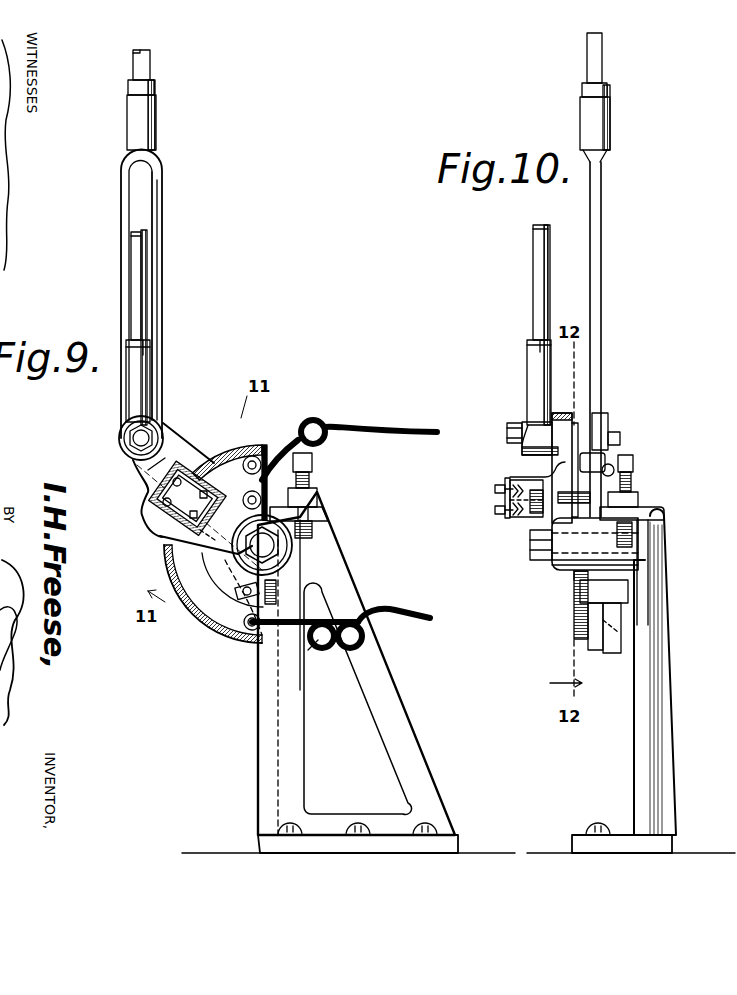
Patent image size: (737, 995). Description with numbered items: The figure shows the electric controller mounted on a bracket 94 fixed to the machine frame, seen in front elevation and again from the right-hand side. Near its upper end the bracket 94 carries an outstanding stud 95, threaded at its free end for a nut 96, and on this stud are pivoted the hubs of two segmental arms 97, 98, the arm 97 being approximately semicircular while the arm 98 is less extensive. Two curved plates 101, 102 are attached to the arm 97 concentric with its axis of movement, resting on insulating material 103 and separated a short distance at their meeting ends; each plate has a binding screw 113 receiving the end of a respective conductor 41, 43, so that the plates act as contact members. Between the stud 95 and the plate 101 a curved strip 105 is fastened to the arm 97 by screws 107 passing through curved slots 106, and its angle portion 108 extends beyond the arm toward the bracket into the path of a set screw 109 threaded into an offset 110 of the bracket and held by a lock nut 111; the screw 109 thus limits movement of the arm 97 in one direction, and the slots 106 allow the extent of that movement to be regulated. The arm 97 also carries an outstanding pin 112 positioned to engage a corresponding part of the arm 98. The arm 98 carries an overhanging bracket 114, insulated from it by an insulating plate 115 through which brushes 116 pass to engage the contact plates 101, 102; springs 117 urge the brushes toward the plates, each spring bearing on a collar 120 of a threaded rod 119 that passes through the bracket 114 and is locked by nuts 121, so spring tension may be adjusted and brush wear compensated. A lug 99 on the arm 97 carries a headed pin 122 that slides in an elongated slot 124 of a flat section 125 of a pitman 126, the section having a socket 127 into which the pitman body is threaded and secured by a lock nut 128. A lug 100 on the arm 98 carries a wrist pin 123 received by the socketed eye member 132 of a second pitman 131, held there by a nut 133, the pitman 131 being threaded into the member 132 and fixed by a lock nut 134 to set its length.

In FIG. 9, the conductor 41 is at (402, 432).
In FIG. 9, the conductor 43 is at (413, 615).
In FIG. 9, the bracket 94 is at (396, 720).
In FIG. 10, the bracket 94 is at (650, 730).
In FIG. 9, the stud 95 is at (276, 556).
In FIG. 10, the stud 95 is at (536, 555).
In FIG. 9, the nut 96 is at (292, 545).
In FIG. 10, the nut 96 is at (580, 597).
In FIG. 9, the segmental arm 97 is at (216, 628).
In FIG. 10, the segmental arm 97 is at (606, 650).
In FIG. 9, the segmental arm 98 is at (146, 526).
In FIG. 10, the segmental arm 98 is at (603, 416).
In FIG. 9, the lug 99 is at (168, 428).
In FIG. 10, the lug 99 is at (607, 417).
In FIG. 9, the lug 100 is at (158, 470).
In FIG. 10, the lug 100 is at (540, 450).
In FIG. 9, the curved plate 101 is at (186, 603).
In FIG. 10, the curved plate 101 is at (574, 618).
In FIG. 9, the curved plate 102 is at (246, 460).
In FIG. 10, the curved plate 102 is at (606, 462).
In FIG. 9, the insulating material 103 is at (246, 640).
In FIG. 10, the insulating material 103 is at (588, 642).
In FIG. 9, the curved strip 105 is at (240, 630).
In FIG. 9, the curved slot 106 is at (216, 566).
In FIG. 9, the screw 107 is at (312, 648).
In FIG. 10, the screw 107 is at (573, 604).
In FIG. 9, the angle portion 108 is at (277, 596).
In FIG. 10, the angle portion 108 is at (628, 594).
In FIG. 9, the set screw 109 is at (312, 532).
In FIG. 10, the set screw 109 is at (634, 535).
In FIG. 9, the offset 110 is at (325, 511).
In FIG. 10, the offset 110 is at (652, 514).
In FIG. 9, the lock nut 111 is at (318, 497).
In FIG. 10, the lock nut 111 is at (640, 500).
In FIG. 9, the pin 112 is at (313, 461).
In FIG. 10, the pin 112 is at (634, 483).
In FIG. 9, the binding screw 113 is at (262, 632).
In FIG. 9, the overhanging bracket 114 is at (188, 472).
In FIG. 10, the overhanging bracket 114 is at (505, 516).
In FIG. 9, the insulating plate 115 is at (156, 505).
In FIG. 10, the insulating plate 115 is at (522, 452).
In FIG. 10, the brush 116 is at (528, 515).
In FIG. 10, the spring 117 is at (520, 486).
In FIG. 10, the rod 119 is at (495, 510).
In FIG. 10, the collar 120 is at (510, 477).
In FIG. 9, the nut 121 is at (200, 515).
In FIG. 10, the nut 121 is at (500, 518).
In FIG. 10, the headed pin 122 is at (618, 433).
In FIG. 9, the wrist pin 123 is at (135, 438).
In FIG. 10, the wrist pin 123 is at (512, 433).
In FIG. 9, the elongated slot 124 is at (153, 290).
In FIG. 9, the pitman section 125 is at (160, 213).
In FIG. 10, the pitman section 125 is at (601, 218).
In FIG. 9, the pitman 126 is at (152, 66).
In FIG. 10, the pitman 126 is at (604, 62).
In FIG. 9, the socket 127 is at (140, 120).
In FIG. 10, the socket 127 is at (612, 125).
In FIG. 9, the lock nut 128 is at (152, 90).
In FIG. 10, the lock nut 128 is at (582, 90).
In FIG. 9, the pitman 131 is at (135, 250).
In FIG. 10, the pitman 131 is at (540, 296).
In FIG. 9, the socketed eye member 132 is at (120, 432).
In FIG. 10, the socketed eye member 132 is at (545, 395).
In FIG. 9, the nut 133 is at (150, 405).
In FIG. 10, the nut 133 is at (516, 424).
In FIG. 9, the lock nut 134 is at (143, 355).
In FIG. 10, the lock nut 134 is at (532, 350).